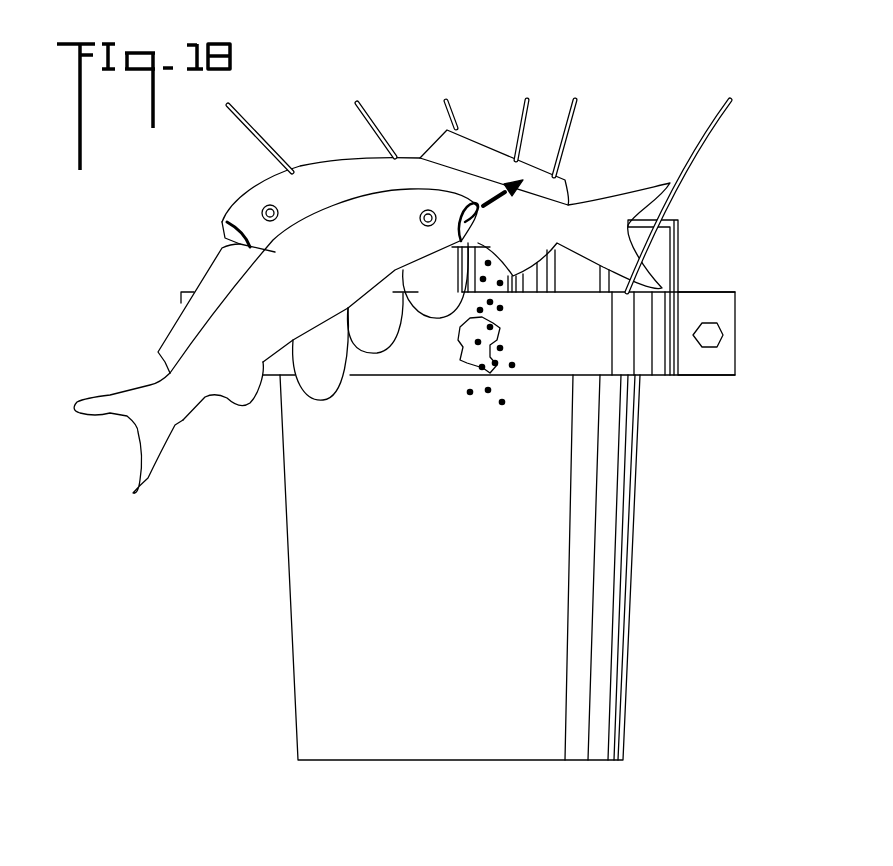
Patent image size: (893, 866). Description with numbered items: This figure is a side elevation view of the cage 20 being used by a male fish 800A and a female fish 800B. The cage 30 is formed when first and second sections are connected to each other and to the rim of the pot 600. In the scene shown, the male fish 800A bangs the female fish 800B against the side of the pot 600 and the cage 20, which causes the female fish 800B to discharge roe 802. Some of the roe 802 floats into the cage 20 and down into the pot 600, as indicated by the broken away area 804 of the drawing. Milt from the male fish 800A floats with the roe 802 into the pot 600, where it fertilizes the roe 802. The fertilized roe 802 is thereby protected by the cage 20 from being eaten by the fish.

The cage 20 is at (741, 240).
The cage 30 is at (684, 254).
The pot 600 is at (628, 610).
The male fish 800A is at (222, 367).
The female fish 800B is at (323, 176).
The roe 802 is at (500, 285).
The broken away area 804 is at (473, 358).